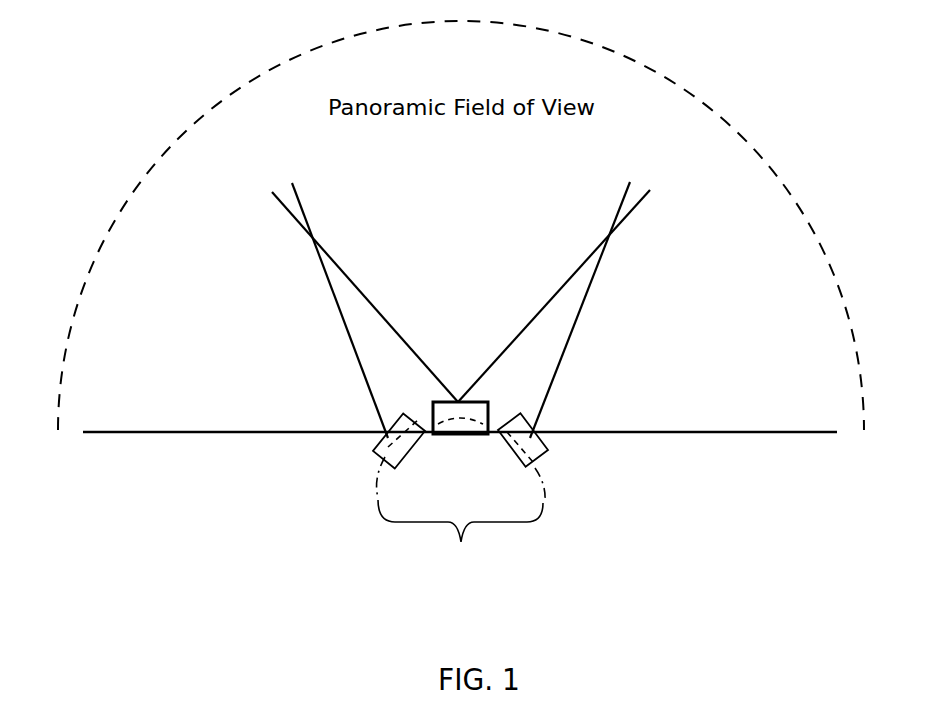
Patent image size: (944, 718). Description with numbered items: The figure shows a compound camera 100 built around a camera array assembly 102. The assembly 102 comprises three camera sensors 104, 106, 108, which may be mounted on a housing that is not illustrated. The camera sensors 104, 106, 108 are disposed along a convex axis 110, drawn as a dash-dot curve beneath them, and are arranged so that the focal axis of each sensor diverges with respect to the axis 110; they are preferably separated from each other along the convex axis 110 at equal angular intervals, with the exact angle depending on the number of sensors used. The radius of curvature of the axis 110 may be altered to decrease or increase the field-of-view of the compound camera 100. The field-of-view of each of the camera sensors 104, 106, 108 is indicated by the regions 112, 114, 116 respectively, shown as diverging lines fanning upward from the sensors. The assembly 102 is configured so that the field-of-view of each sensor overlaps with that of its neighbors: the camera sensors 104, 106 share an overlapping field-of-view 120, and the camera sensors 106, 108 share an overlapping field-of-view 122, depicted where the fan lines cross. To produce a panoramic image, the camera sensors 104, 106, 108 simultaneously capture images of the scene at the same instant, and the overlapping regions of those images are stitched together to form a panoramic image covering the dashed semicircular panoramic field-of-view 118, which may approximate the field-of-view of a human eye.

The compound camera 100 is at (186, 484).
The camera array assembly 102 is at (460, 518).
The camera sensor 104 is at (376, 456).
The camera sensor 106 is at (458, 402).
The camera sensor 108 is at (546, 441).
The convex axis 110 is at (543, 488).
The field-of-view 112 is at (263, 375).
The field-of-view 114 is at (483, 277).
The field-of-view 116 is at (691, 352).
The panoramic field-of-view 118 is at (720, 118).
The overlapping field-of-view 120 is at (297, 197).
The overlapping field-of-view 122 is at (635, 200).